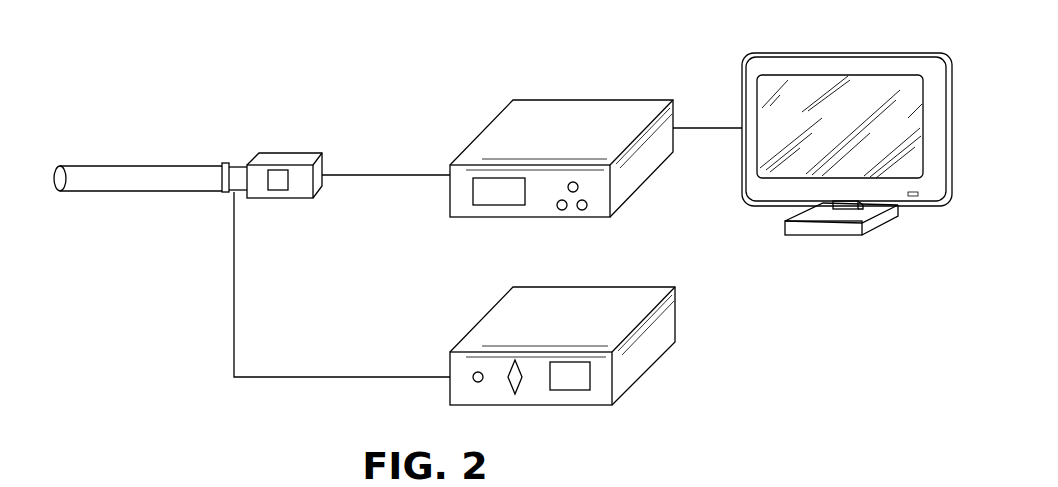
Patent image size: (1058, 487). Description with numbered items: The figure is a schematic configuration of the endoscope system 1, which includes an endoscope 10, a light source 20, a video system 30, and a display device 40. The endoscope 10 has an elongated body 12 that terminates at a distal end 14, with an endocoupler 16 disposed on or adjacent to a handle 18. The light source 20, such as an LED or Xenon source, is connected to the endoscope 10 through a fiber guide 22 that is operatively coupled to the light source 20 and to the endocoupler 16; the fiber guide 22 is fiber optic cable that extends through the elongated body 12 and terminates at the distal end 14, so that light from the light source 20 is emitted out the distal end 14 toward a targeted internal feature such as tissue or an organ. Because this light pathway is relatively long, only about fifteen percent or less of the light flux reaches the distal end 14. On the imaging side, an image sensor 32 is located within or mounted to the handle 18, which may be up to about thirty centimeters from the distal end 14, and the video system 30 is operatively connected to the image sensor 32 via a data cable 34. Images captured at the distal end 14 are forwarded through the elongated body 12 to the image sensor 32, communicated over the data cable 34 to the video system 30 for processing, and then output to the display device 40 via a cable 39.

The endoscope system 1 is at (307, 90).
The endoscope 10 is at (141, 118).
The elongated body 12 is at (154, 166).
The distal end 14 is at (50, 165).
The endocoupler 16 is at (228, 162).
The handle 18 is at (277, 154).
The image sensor 32 is at (279, 190).
The data cable 34 is at (367, 175).
The fiber guide 22 is at (237, 290).
The video system 30 is at (553, 141).
The cable 39 is at (707, 127).
The display device 40 is at (828, 119).
The light source 20 is at (553, 329).